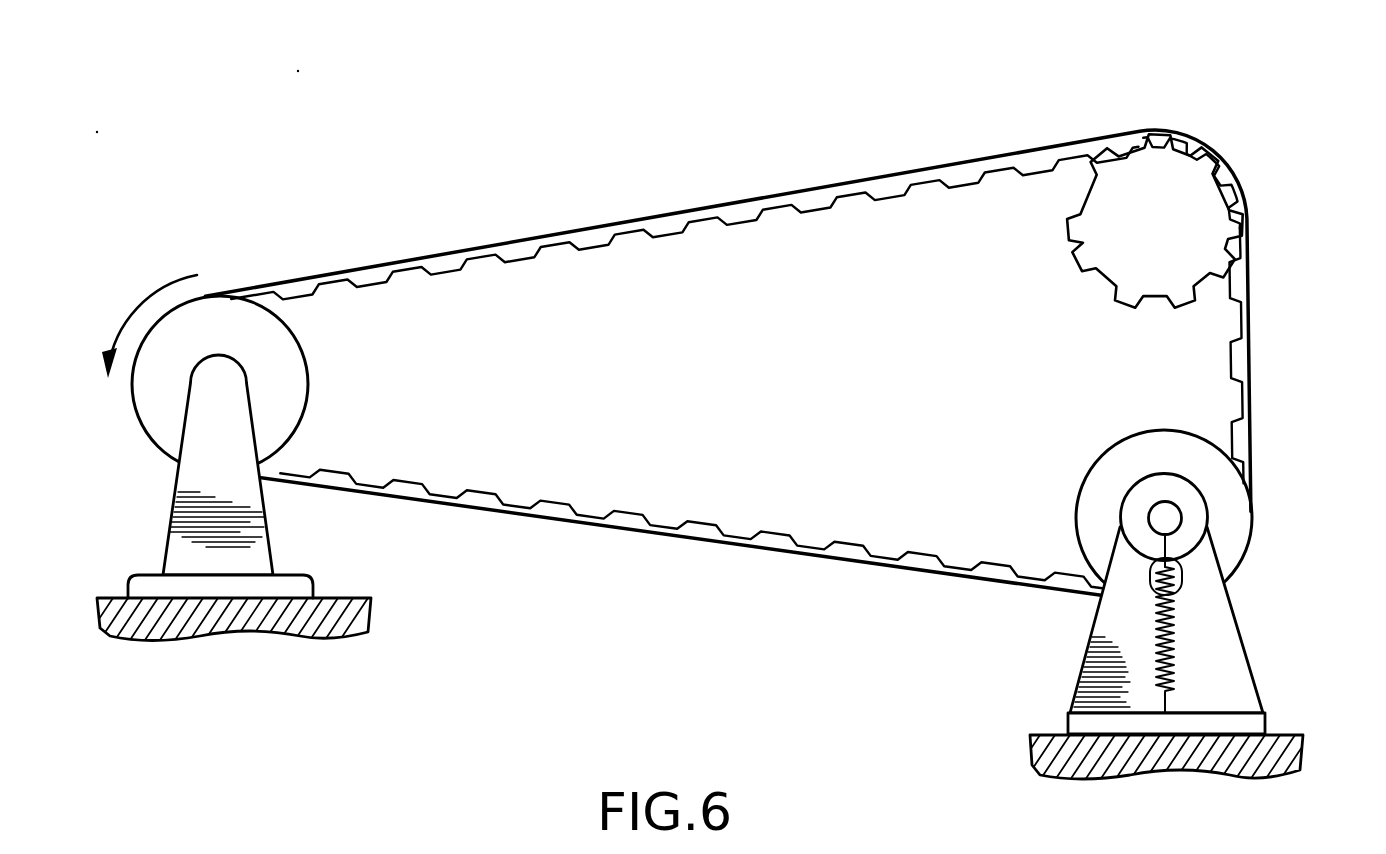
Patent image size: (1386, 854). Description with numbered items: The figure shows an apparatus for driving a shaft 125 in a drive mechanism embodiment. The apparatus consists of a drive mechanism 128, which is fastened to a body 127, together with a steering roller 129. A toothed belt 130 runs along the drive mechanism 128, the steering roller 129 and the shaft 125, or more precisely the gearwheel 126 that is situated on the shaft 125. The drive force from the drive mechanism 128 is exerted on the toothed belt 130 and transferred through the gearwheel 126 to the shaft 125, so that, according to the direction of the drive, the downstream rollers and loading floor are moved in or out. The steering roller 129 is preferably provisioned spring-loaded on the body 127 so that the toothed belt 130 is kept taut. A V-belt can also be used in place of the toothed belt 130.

The shaft 125 is at (1187, 188).
The gearwheel 126 is at (1198, 133).
The body 127 is at (332, 597).
The drive mechanism 128 is at (175, 505).
The steering roller 129 is at (1120, 440).
The toothed belt 130 is at (698, 203).